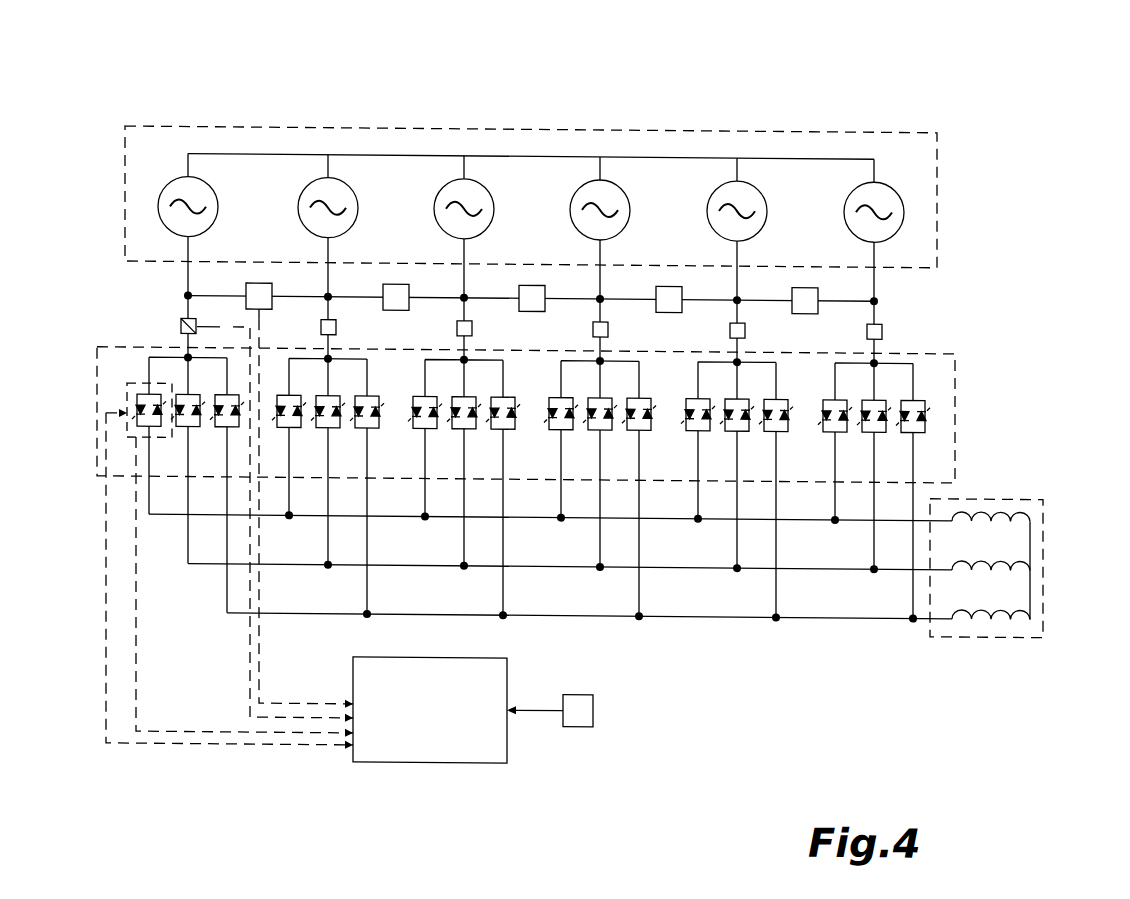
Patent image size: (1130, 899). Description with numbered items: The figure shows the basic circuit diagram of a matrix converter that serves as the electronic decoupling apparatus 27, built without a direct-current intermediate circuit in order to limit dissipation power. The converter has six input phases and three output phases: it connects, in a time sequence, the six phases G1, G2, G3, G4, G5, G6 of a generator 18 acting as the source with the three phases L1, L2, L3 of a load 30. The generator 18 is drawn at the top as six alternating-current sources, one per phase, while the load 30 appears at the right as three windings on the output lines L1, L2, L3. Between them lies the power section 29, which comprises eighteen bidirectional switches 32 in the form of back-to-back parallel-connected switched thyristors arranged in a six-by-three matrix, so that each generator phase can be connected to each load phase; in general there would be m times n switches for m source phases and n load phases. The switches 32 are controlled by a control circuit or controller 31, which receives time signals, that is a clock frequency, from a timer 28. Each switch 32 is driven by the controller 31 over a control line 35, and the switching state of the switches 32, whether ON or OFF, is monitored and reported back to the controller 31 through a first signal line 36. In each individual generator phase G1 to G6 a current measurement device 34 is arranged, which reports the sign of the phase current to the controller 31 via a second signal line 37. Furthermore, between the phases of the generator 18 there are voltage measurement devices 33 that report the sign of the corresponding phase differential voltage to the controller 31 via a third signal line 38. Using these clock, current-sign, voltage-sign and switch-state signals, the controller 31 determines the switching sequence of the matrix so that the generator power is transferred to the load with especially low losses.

The generator 18 is at (587, 207).
The electronic decoupling apparatus 27 is at (995, 321).
The timer 28 is at (578, 723).
The power section 29 is at (955, 412).
The load 30 is at (628, 599).
The controller 31 is at (447, 730).
The bidirectional switch 32 is at (137, 383).
The voltage measurement device 33 is at (266, 283).
The current measurement device 34 is at (181, 322).
The control line 35 is at (106, 680).
The first signal line 36 is at (137, 700).
The second signal line 37 is at (251, 677).
The third signal line 38 is at (258, 630).
The generator phase G1 is at (182, 181).
The generator phase G2 is at (322, 181).
The generator phase G3 is at (458, 181).
The generator phase G4 is at (594, 181).
The generator phase G5 is at (731, 181).
The generator phase G6 is at (868, 181).
The load phase L1 is at (995, 512).
The load phase L2 is at (995, 560).
The load phase L3 is at (995, 612).